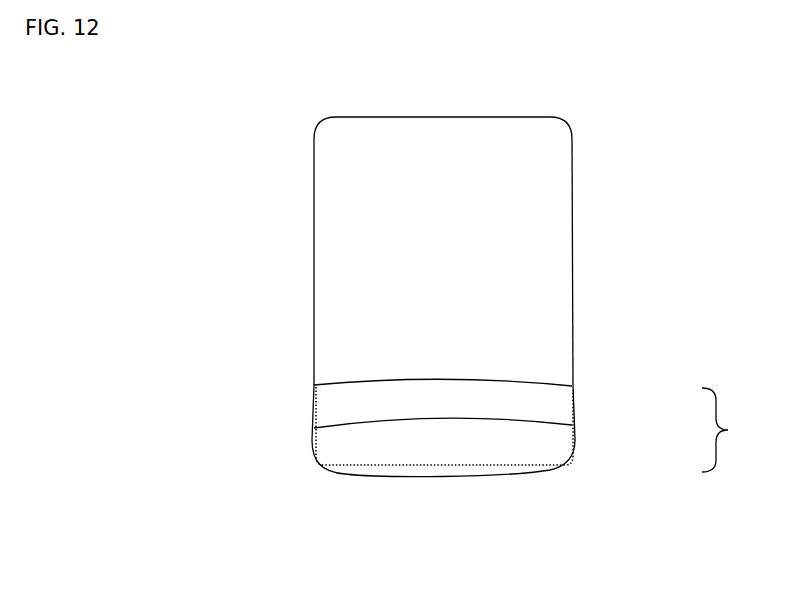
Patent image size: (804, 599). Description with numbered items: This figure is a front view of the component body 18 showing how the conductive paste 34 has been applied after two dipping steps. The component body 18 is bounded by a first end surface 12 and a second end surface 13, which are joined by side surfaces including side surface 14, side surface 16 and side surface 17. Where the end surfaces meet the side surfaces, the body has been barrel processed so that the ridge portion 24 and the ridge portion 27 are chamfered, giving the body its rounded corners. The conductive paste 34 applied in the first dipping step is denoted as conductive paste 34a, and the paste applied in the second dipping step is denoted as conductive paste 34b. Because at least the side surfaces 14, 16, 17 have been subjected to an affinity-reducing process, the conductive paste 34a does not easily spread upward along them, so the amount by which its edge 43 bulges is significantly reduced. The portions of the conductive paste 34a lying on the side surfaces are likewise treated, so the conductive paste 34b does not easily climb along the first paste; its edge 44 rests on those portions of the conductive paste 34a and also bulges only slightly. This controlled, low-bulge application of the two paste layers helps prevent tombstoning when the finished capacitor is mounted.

The first end surface 12 is at (445, 468).
The second end surface 13 is at (427, 117).
The side surface 14 is at (332, 183).
The side surface 16 is at (315, 253).
The side surface 17 is at (572, 227).
The component body 18 is at (575, 162).
The ridge portion 24 is at (316, 460).
The ridge portion 27 is at (565, 118).
The conductive paste 34 is at (538, 431).
The conductive paste applied in the first dipping step 34a is at (562, 403).
The conductive paste applied in the second dipping step 34b is at (555, 452).
The edge of the conductive paste applied in the first dipping step 43 is at (522, 380).
The edge of the conductive paste applied in the second dipping step 44 is at (347, 422).